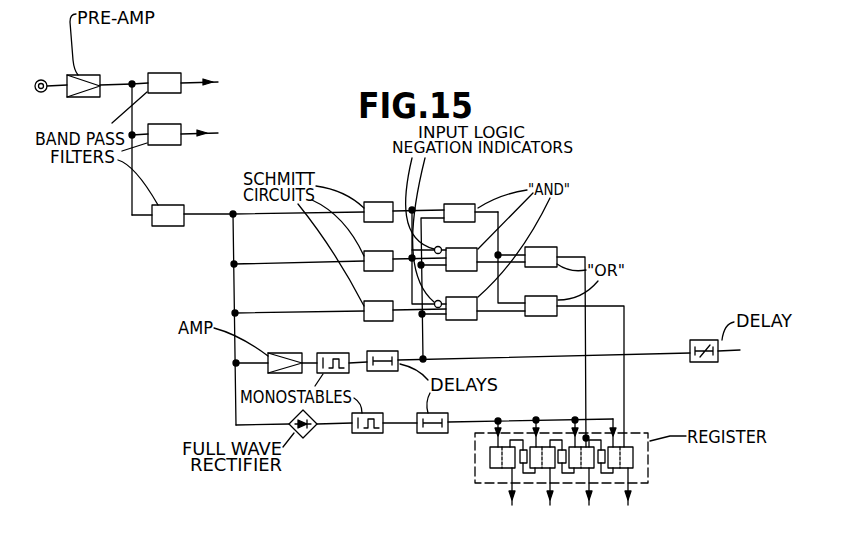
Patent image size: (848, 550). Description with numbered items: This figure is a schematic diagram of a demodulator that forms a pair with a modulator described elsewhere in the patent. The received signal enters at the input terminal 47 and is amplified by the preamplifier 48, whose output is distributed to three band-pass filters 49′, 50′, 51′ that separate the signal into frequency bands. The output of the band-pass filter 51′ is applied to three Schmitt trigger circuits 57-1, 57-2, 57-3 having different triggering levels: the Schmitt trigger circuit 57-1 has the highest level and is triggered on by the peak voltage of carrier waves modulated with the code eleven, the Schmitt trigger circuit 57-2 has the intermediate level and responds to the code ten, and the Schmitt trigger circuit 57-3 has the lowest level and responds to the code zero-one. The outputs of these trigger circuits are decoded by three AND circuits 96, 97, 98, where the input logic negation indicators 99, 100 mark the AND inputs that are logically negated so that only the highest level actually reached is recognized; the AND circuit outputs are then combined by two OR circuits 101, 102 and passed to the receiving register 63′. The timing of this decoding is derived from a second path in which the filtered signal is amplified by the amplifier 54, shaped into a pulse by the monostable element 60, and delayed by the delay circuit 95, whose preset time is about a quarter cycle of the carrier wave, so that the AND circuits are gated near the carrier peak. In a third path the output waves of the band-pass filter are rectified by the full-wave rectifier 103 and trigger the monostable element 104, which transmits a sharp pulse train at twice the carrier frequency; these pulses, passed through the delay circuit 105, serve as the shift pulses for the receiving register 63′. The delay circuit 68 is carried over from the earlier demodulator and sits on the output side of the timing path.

The input terminal 47 is at (42, 79).
The preamplifier 48 is at (96, 77).
The band-pass filter 49′ is at (167, 73).
The band-pass filter 50′ is at (170, 125).
The band-pass filter 51′ is at (173, 227).
The Schmitt trigger circuit 57-1 is at (374, 202).
The Schmitt trigger circuit 57-2 is at (380, 252).
The Schmitt trigger circuit 57-3 is at (382, 302).
The AND circuit 96 is at (476, 206).
The AND circuit 97 is at (480, 256).
The AND circuit 98 is at (468, 321).
The input logic negation indicator 99 is at (439, 236).
The input logic negation indicator 100 is at (454, 289).
The OR circuit 101 is at (556, 248).
The OR circuit 102 is at (557, 297).
The amplifier 54 is at (285, 346).
The monostable element 60 is at (327, 346).
The delay circuit 95 is at (389, 371).
The delay circuit 68 is at (699, 336).
The full-wave rectifier 103 is at (303, 440).
The monostable element 104 is at (366, 434).
The delay circuit 105 is at (431, 434).
The receiving register 63′ is at (690, 486).